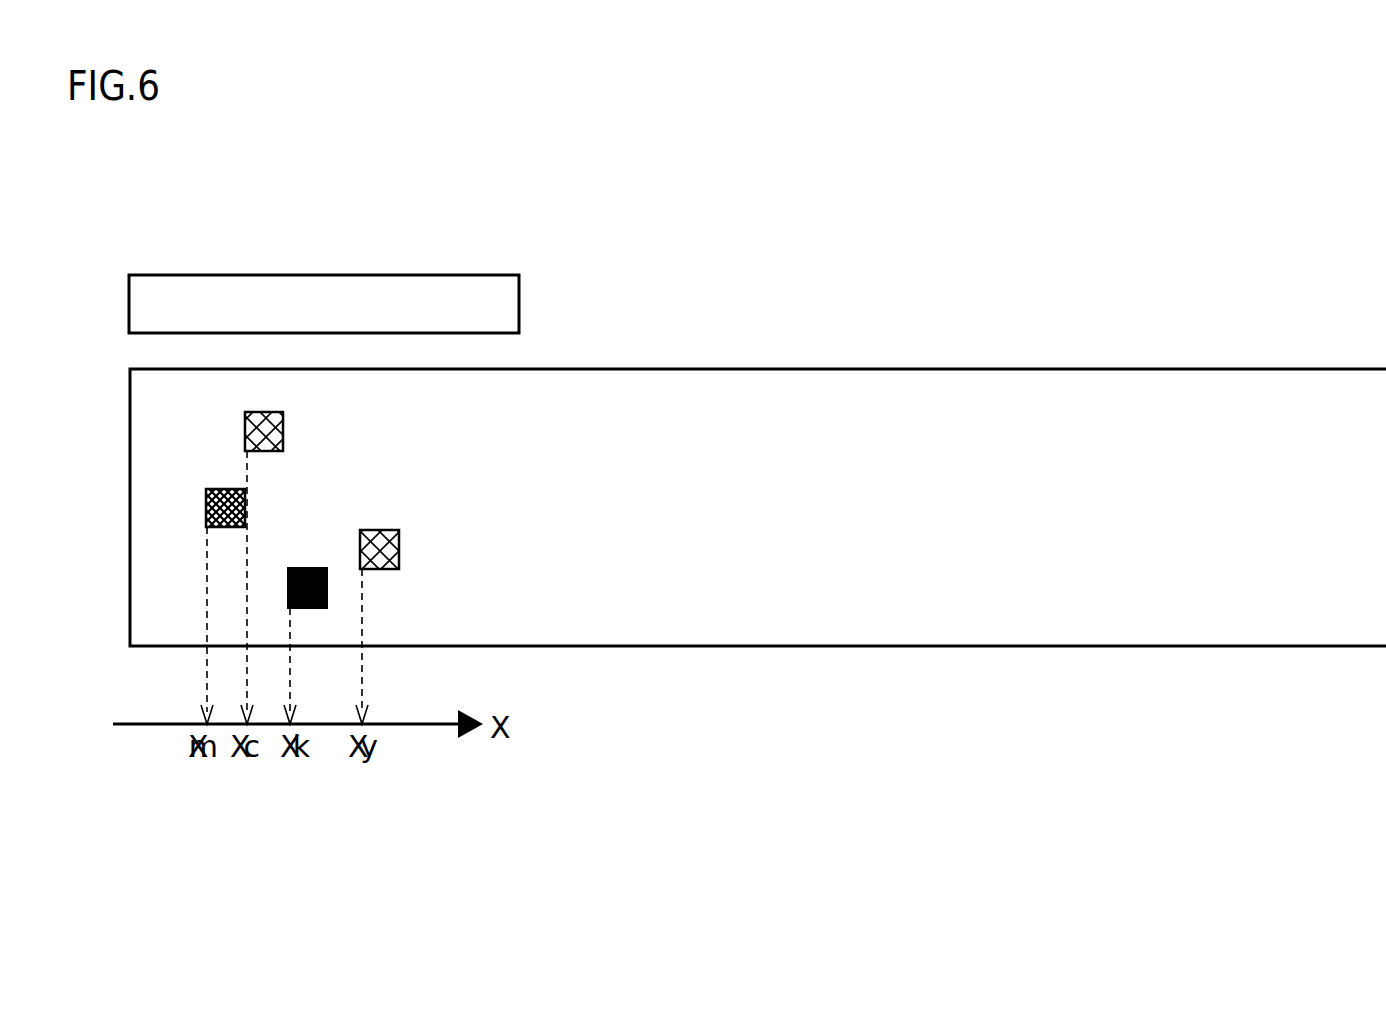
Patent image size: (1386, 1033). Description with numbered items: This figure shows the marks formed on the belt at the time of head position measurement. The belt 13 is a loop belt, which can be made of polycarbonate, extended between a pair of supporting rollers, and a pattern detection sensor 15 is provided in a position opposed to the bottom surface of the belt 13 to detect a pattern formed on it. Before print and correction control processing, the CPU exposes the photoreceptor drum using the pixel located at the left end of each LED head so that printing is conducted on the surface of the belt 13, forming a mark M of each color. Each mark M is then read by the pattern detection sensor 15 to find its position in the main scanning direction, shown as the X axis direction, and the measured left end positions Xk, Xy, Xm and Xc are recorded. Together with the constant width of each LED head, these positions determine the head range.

The pattern detection sensor 15 is at (341, 282).
The belt 13 is at (821, 385).
The mark M is at (245, 428).